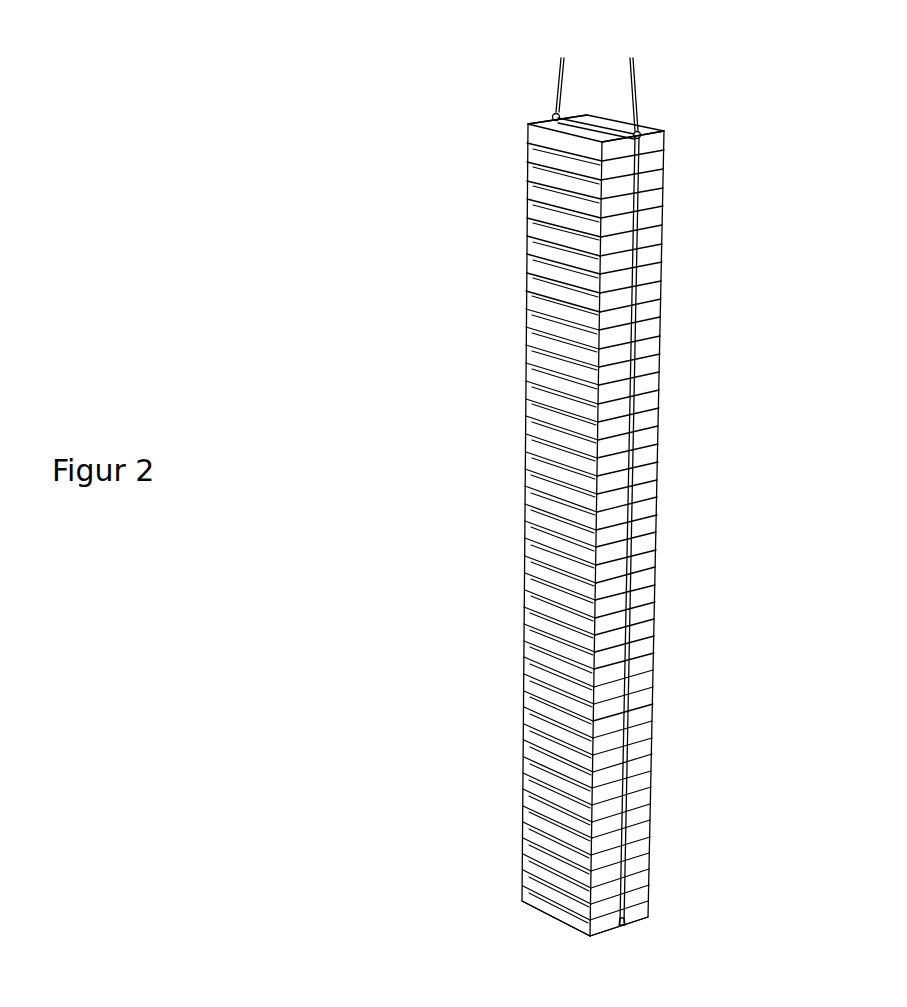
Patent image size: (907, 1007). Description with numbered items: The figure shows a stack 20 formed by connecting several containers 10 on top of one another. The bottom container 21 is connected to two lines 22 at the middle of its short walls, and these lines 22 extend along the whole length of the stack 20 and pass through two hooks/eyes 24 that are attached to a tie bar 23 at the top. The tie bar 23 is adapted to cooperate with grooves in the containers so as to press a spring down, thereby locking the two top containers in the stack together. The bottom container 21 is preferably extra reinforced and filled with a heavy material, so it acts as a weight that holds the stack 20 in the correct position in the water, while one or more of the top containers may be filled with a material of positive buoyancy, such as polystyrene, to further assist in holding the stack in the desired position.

The container 10 is at (652, 202).
The stack 20 is at (733, 375).
The bottom container 21 is at (637, 913).
The line 22 is at (628, 75).
The tie bar 23 is at (641, 133).
The hook/eye 24 is at (553, 113).